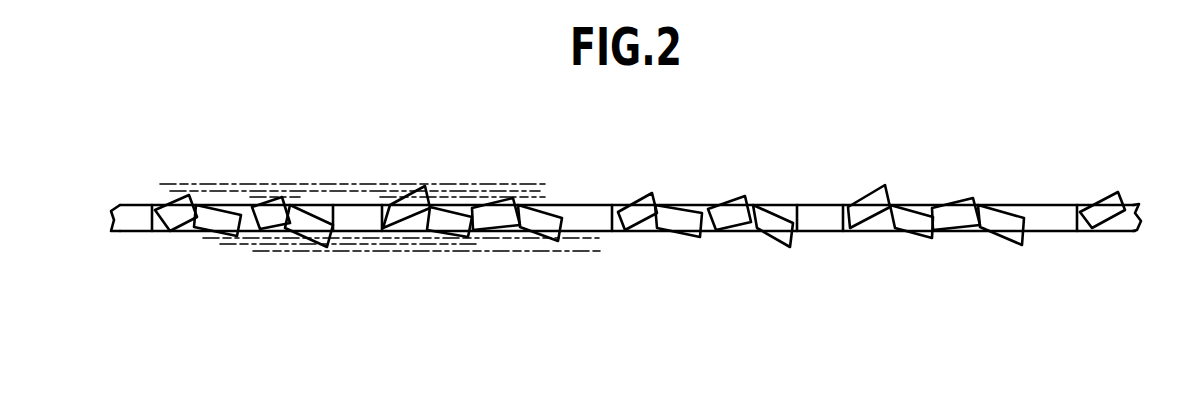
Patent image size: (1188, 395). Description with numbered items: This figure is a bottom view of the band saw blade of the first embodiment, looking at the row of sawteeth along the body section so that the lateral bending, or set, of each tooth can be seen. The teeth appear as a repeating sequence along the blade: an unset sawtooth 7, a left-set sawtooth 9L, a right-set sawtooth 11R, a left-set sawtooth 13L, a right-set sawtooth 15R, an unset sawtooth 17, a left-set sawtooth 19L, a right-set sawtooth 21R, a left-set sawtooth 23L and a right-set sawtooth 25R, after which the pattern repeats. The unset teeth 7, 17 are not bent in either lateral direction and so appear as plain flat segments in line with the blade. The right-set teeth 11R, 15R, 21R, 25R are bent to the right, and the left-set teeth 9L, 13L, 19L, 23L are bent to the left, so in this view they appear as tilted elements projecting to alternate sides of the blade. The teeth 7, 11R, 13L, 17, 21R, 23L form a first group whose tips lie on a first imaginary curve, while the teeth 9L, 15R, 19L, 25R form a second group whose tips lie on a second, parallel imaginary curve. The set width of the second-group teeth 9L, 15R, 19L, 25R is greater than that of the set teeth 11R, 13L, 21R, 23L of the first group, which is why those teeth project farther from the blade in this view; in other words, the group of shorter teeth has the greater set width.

The unset sawtooth 7 is at (1048, 210).
The left-set sawtooth 9L is at (1110, 195).
The right-set sawtooth 11R is at (695, 236).
The left-set sawtooth 13L is at (745, 197).
The right-set sawtooth 15R is at (789, 246).
The unset sawtooth 17 is at (815, 212).
The left-set sawtooth 19L is at (882, 188).
The right-set sawtooth 21R is at (930, 240).
The left-set sawtooth 23L is at (973, 200).
The right-set sawtooth 25R is at (1023, 245).